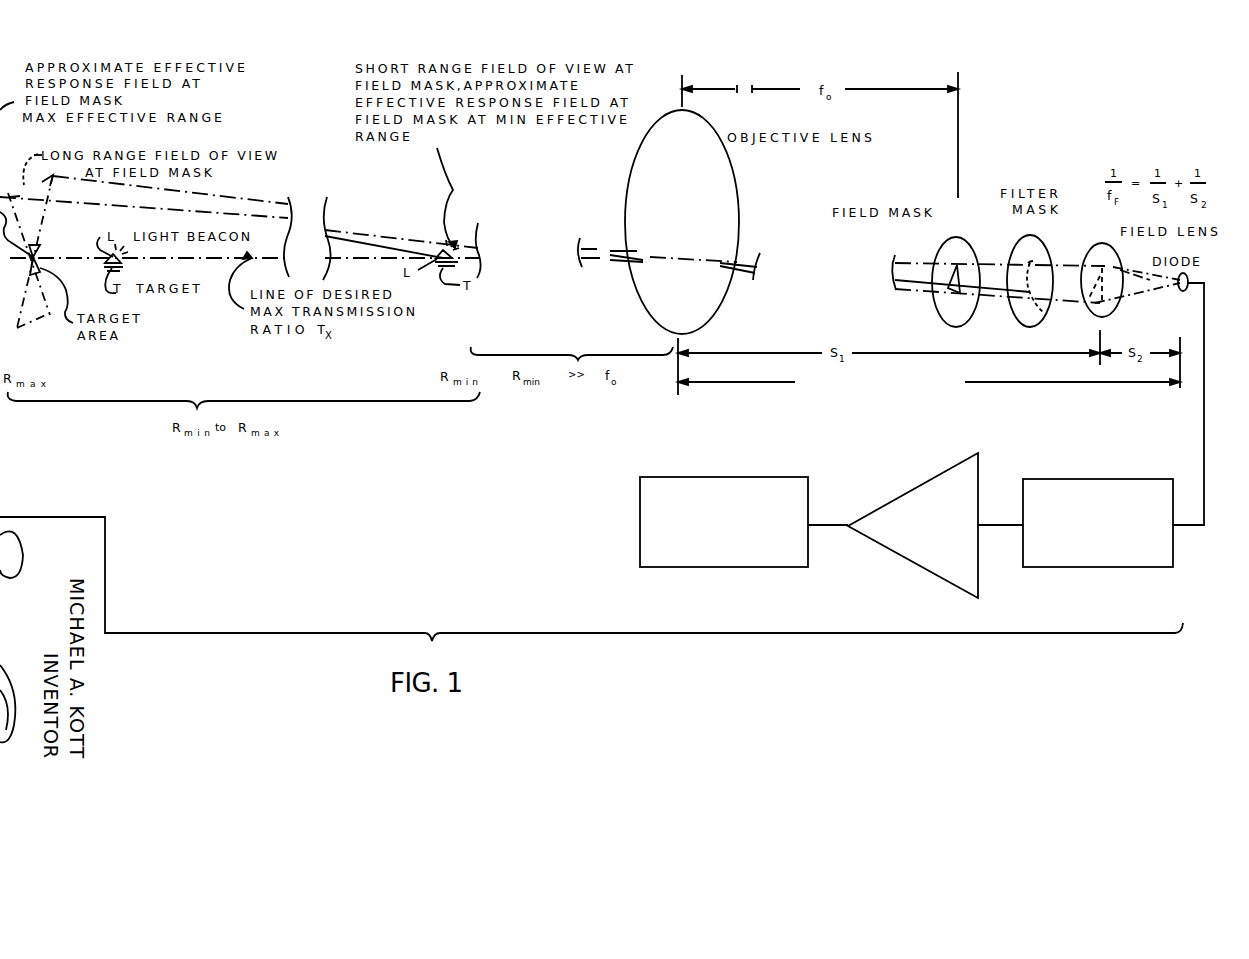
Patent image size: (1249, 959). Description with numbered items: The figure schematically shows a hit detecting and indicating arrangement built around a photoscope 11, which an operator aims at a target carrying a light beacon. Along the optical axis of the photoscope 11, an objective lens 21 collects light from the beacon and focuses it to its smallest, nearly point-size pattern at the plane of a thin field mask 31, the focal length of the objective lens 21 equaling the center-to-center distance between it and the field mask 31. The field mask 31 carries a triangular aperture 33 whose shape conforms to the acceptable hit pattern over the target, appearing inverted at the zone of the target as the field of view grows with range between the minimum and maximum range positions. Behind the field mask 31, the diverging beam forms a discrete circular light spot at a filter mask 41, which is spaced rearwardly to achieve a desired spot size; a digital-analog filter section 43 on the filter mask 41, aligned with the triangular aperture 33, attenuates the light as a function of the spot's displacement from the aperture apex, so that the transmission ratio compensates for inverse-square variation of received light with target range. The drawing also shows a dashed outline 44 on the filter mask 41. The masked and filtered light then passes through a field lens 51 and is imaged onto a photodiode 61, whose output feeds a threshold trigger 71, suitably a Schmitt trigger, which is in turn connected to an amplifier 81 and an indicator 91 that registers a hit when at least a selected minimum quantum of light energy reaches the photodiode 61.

The photoscope 11 is at (929, 383).
The objective lens 21 is at (694, 136).
The field mask 31 is at (933, 248).
The triangular aperture 33 is at (960, 280).
The filter mask 41 is at (1030, 240).
The digital-analog filter section 43 is at (1028, 263).
The filter mask aperture dashed edge 44 is at (1038, 318).
The field lens 51 is at (1086, 258).
The photodiode 61 is at (1184, 291).
The threshold trigger 71 is at (1153, 479).
The amplifier 81 is at (978, 477).
The indicator 91 is at (793, 477).